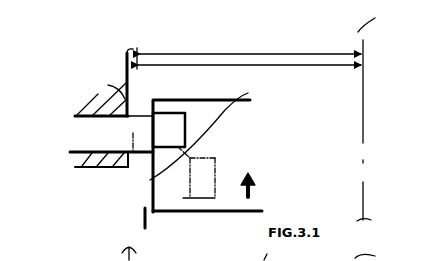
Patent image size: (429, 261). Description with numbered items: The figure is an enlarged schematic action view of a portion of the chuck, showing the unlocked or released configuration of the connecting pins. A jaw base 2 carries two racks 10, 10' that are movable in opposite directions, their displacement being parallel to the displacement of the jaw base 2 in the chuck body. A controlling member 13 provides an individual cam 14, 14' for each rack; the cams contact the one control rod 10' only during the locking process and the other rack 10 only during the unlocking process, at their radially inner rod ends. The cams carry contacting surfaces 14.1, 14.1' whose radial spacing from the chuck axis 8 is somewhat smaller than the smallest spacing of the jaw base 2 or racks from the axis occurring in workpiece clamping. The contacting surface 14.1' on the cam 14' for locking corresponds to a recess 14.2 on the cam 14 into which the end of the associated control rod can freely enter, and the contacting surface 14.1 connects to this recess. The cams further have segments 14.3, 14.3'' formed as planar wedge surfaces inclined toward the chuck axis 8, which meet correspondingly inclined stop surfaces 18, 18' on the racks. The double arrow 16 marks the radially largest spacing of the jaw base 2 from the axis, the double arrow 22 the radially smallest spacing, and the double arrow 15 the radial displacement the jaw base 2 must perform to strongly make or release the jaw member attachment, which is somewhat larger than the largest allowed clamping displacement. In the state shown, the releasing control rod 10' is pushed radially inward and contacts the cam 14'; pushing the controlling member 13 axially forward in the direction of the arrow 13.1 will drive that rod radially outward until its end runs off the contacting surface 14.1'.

The jaw base 2 is at (90, 167).
The chuck axis 8 is at (364, 217).
The rack 10 is at (93, 163).
The rack 10' is at (68, 142).
The controlling member 13 is at (298, 202).
The arrow 13.1 is at (253, 192).
The cam 14 is at (164, 112).
The cam 14' is at (209, 153).
The contacting surface 14.1 is at (228, 162).
The contacting surface 14.1' is at (145, 169).
The recess 14.2 is at (202, 178).
The segment 14.3 is at (102, 92).
The contact face 14.3'' is at (177, 174).
The double arrow 15 is at (133, 52).
The double arrow 16 is at (318, 65).
The stop surface 18 is at (95, 122).
The stop surface 18' is at (197, 94).
The double arrow 22 is at (362, 40).